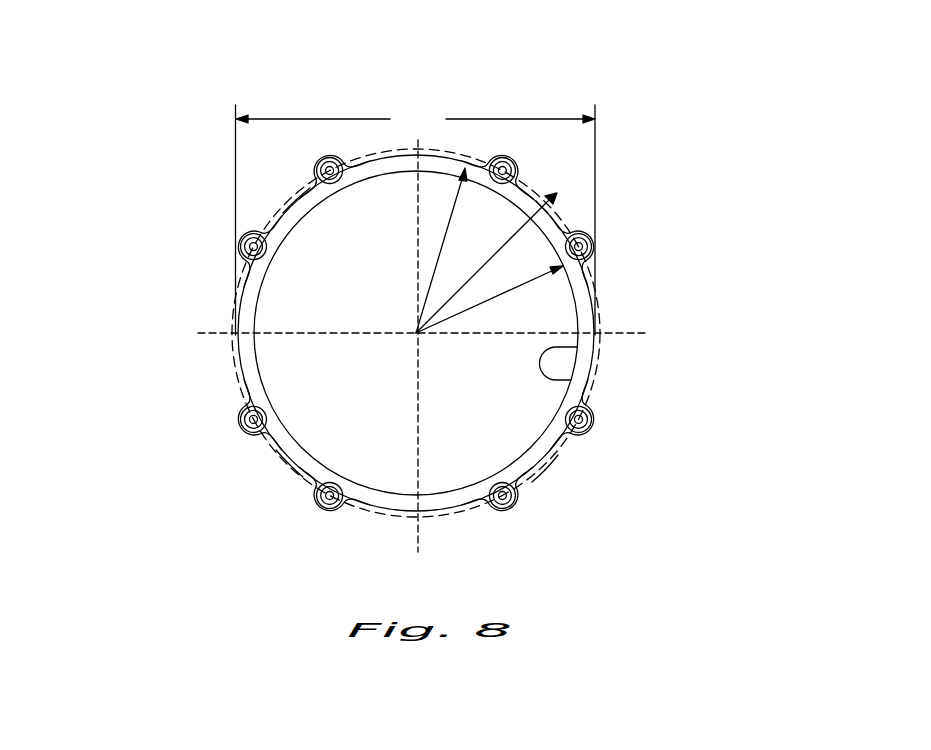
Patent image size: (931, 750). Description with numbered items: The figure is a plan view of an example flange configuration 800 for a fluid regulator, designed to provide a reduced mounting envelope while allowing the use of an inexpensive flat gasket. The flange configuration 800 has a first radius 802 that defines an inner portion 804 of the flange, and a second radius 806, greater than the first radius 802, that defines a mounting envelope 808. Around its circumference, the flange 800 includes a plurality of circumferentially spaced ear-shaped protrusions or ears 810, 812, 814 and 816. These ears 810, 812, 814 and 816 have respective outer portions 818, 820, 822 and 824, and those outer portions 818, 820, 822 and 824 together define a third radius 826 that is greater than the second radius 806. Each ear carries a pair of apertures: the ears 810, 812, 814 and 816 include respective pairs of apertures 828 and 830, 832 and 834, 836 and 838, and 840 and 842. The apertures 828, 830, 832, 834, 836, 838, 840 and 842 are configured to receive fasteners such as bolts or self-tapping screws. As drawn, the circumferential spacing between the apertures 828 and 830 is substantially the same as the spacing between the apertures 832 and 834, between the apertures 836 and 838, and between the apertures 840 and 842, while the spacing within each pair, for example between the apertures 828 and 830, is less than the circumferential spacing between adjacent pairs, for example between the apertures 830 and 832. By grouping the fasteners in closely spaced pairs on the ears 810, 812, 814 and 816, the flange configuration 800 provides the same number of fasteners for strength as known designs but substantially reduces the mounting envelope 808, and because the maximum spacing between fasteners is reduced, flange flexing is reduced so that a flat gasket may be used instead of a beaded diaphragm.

The flange configuration 800 is at (648, 69).
The first radius 802 is at (450, 317).
The inner portion 804 is at (571, 380).
The second radius 806 is at (440, 257).
The mounting envelope 808 is at (416, 220).
The ear 810 is at (566, 213).
The ear 812 is at (272, 207).
The ear 814 is at (270, 462).
The ear 816 is at (563, 460).
The outer portion 818 is at (528, 186).
The outer portion 820 is at (306, 190).
The outer portion 822 is at (278, 493).
The outer portion 824 is at (537, 499).
The third radius 826 is at (463, 290).
The aperture 828 is at (591, 246).
The aperture 830 is at (518, 160).
The aperture 832 is at (317, 167).
The aperture 834 is at (242, 250).
The aperture 836 is at (240, 420).
The aperture 838 is at (326, 508).
The aperture 840 is at (504, 512).
The aperture 842 is at (590, 420).